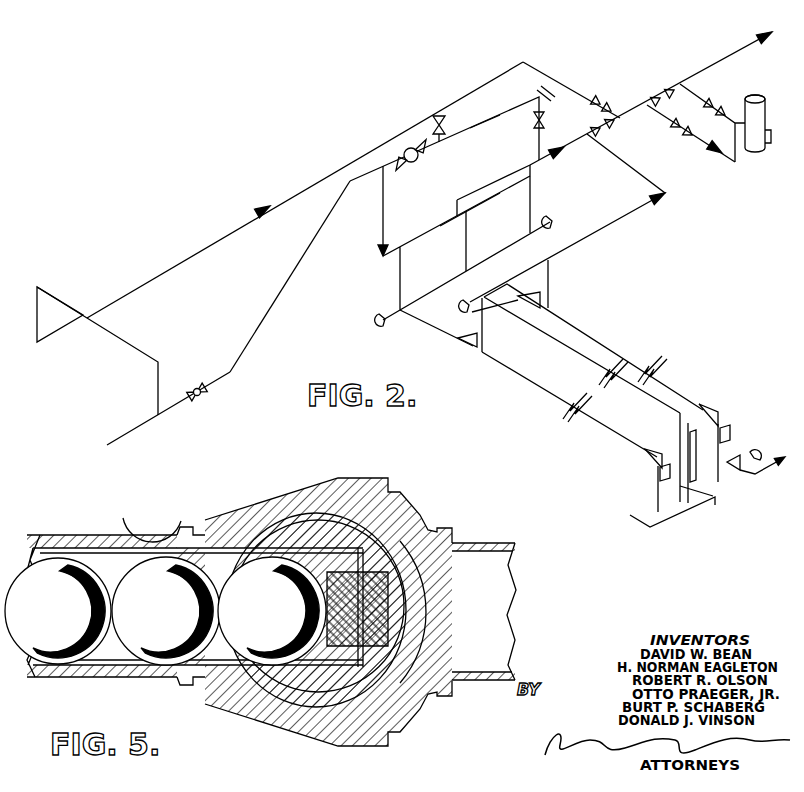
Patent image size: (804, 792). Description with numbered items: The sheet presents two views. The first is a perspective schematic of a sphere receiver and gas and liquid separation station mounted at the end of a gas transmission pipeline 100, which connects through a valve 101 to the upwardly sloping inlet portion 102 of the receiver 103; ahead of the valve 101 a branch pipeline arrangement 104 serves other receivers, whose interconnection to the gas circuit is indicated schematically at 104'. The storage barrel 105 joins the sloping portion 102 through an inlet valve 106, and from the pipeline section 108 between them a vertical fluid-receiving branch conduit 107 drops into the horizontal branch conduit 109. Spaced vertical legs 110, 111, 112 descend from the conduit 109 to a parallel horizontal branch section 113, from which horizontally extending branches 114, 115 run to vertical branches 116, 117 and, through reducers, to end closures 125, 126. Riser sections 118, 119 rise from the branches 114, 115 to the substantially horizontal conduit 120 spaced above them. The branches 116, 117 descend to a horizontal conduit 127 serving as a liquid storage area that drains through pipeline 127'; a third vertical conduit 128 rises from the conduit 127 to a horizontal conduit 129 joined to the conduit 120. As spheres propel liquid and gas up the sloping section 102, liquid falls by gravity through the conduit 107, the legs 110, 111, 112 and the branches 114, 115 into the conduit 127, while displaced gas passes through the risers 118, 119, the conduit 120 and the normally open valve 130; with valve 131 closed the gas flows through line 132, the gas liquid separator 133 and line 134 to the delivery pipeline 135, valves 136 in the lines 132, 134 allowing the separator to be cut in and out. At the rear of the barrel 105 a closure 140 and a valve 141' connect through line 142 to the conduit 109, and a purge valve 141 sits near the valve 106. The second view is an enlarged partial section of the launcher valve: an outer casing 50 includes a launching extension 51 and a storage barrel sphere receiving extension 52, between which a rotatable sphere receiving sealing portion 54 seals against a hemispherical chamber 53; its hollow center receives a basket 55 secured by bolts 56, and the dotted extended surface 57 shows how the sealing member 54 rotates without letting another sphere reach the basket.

In FIG. 2, the gas transmission pipeline 100 is at (147, 422).
In FIG. 2, the valve 101 is at (210, 396).
In FIG. 2, the upwardly sloping inlet portion 102 is at (281, 293).
In FIG. 2, the receiver 103 is at (454, 88).
In FIG. 2, the branch pipeline arrangement 104 is at (112, 351).
In FIG. 2, the receiver interconnection 104' is at (305, 190).
In FIG. 2, the storage barrel 105 is at (487, 125).
In FIG. 2, the inlet valve 106 is at (411, 163).
In FIG. 2, the vertical fluid-receiving branch conduit 107 is at (383, 215).
In FIG. 2, the pipeline section 108 is at (358, 178).
In FIG. 2, the horizontal branch conduit 109 is at (428, 232).
In FIG. 2, the vertical leg 110 is at (400, 272).
In FIG. 2, the vertical leg 111 is at (466, 230).
In FIG. 2, the vertical leg 112 is at (530, 193).
In FIG. 2, the horizontal branch section 113 is at (497, 255).
In FIG. 2, the horizontally extending branch 114 is at (523, 378).
In FIG. 2, the horizontally extending branch 115 is at (577, 330).
In FIG. 2, the vertical branch 116 is at (655, 494).
In FIG. 2, the vertical branch 117 is at (722, 452).
In FIG. 2, the riser section 118 is at (460, 342).
In FIG. 2, the riser section 119 is at (548, 284).
In FIG. 2, the substantially horizontal conduit 120 is at (610, 226).
In FIG. 2, the end closure 125 is at (645, 453).
In FIG. 2, the end closure 126 is at (701, 404).
In FIG. 2, the horizontal conduit 127 is at (672, 522).
In FIG. 2, the pipeline 127' is at (773, 490).
In FIG. 2, the third vertical conduit 128 is at (713, 497).
In FIG. 2, the horizontal conduit 129 is at (690, 398).
In FIG. 2, the valve 130 is at (600, 133).
In FIG. 2, the valve 131 is at (657, 93).
In FIG. 2, the line 132 is at (706, 140).
In FIG. 2, the gas liquid separator 133 is at (757, 150).
In FIG. 2, the line 134 is at (724, 110).
In FIG. 2, the pipeline 135 is at (712, 64).
In FIG. 2, the valve 136 is at (675, 133).
In FIG. 2, the closure 140 is at (545, 84).
In FIG. 2, the purge valve 141 is at (417, 106).
In FIG. 2, the valve 141' is at (584, 89).
In FIG. 2, the line 142 is at (477, 188).
In FIG. 5, the outer casing 50 is at (378, 517).
In FIG. 5, the launching extension 51 is at (452, 553).
In FIG. 5, the storage barrel sphere receiving extension 52 is at (140, 545).
In FIG. 5, the hemispherical chamber 53 is at (298, 515).
In FIG. 5, the rotatable sphere receiving sealing portion 54 is at (330, 515).
In FIG. 5, the basket 55 is at (300, 705).
In FIG. 5, the bolts 56 is at (412, 523).
In FIG. 5, the extended surface 57 is at (200, 525).